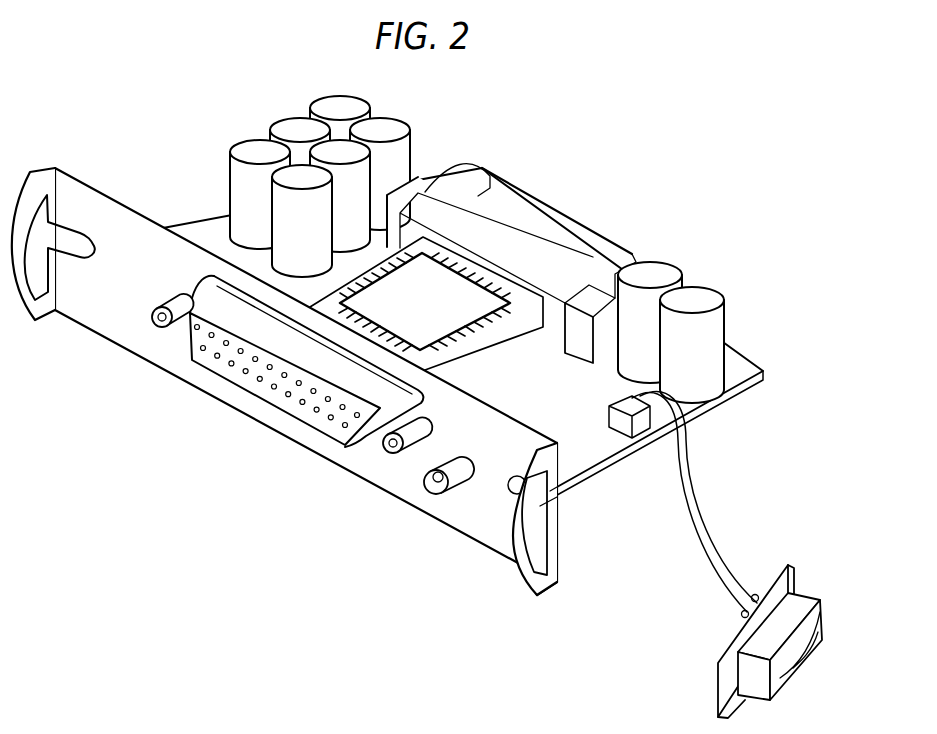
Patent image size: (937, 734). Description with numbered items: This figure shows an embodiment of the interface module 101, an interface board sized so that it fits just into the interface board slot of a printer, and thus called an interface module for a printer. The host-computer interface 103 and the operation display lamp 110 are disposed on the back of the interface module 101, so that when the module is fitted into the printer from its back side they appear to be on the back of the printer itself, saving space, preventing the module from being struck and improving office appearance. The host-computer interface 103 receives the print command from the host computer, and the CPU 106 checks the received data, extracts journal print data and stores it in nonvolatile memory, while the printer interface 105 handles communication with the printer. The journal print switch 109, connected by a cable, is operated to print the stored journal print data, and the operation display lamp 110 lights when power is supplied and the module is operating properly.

The interface module 101 is at (755, 344).
The host-computer interface 103 is at (272, 367).
The printer interface 105 is at (551, 188).
The CPU 106 is at (450, 256).
The journal print switch 109 is at (730, 676).
The operation display lamp 110 is at (448, 472).